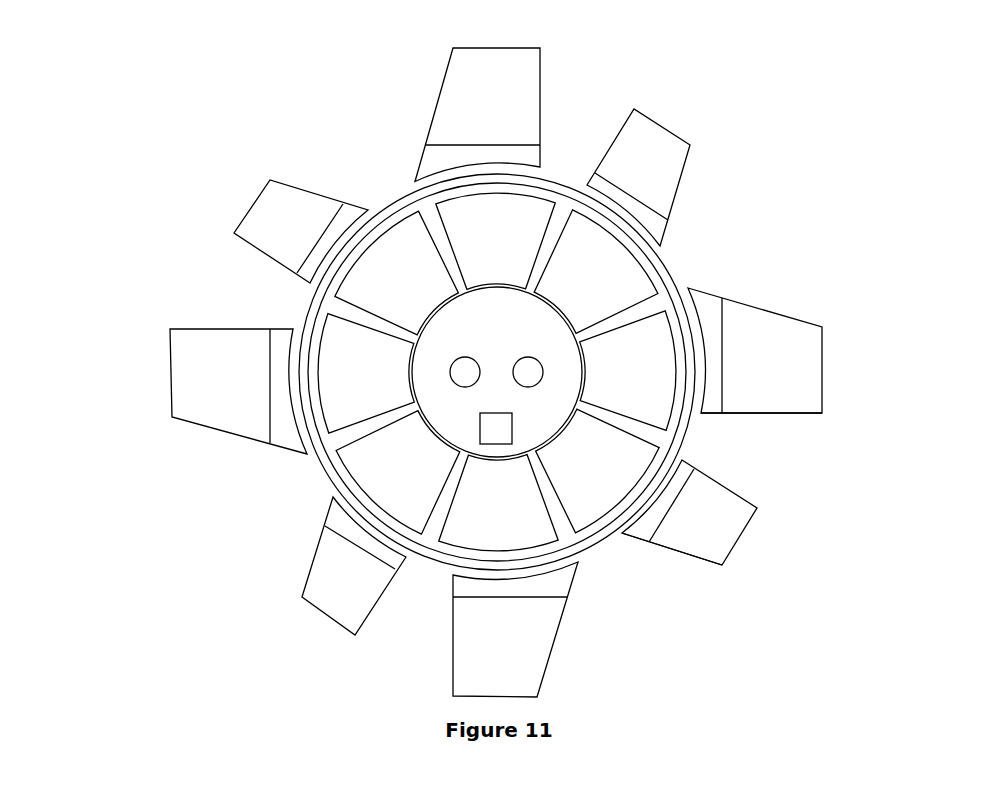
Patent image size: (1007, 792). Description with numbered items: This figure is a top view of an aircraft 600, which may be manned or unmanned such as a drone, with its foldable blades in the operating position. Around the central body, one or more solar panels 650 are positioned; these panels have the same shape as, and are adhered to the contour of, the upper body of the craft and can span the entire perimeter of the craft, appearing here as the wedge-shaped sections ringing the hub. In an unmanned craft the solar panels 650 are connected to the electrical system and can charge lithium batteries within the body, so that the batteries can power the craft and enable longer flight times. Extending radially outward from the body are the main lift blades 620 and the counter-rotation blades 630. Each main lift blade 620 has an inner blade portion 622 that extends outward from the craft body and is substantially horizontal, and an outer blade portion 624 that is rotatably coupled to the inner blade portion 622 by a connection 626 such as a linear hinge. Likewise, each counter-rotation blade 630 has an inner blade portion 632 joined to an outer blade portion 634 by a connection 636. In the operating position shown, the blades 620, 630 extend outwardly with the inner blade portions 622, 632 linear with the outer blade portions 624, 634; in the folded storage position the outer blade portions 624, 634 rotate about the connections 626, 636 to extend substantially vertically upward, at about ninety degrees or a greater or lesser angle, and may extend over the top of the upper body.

The aircraft 600 is at (542, 372).
The main lift blades 620 is at (801, 344).
The inner blade portion 622 is at (702, 290).
The outer blade portion 624 is at (760, 413).
The connection 626 is at (722, 320).
The counter-rotation blades 630 is at (700, 552).
The inner blade portion 632 is at (635, 540).
The outer blade portion 634 is at (677, 550).
The connection 636 is at (657, 523).
The solar panels 650 is at (383, 473).